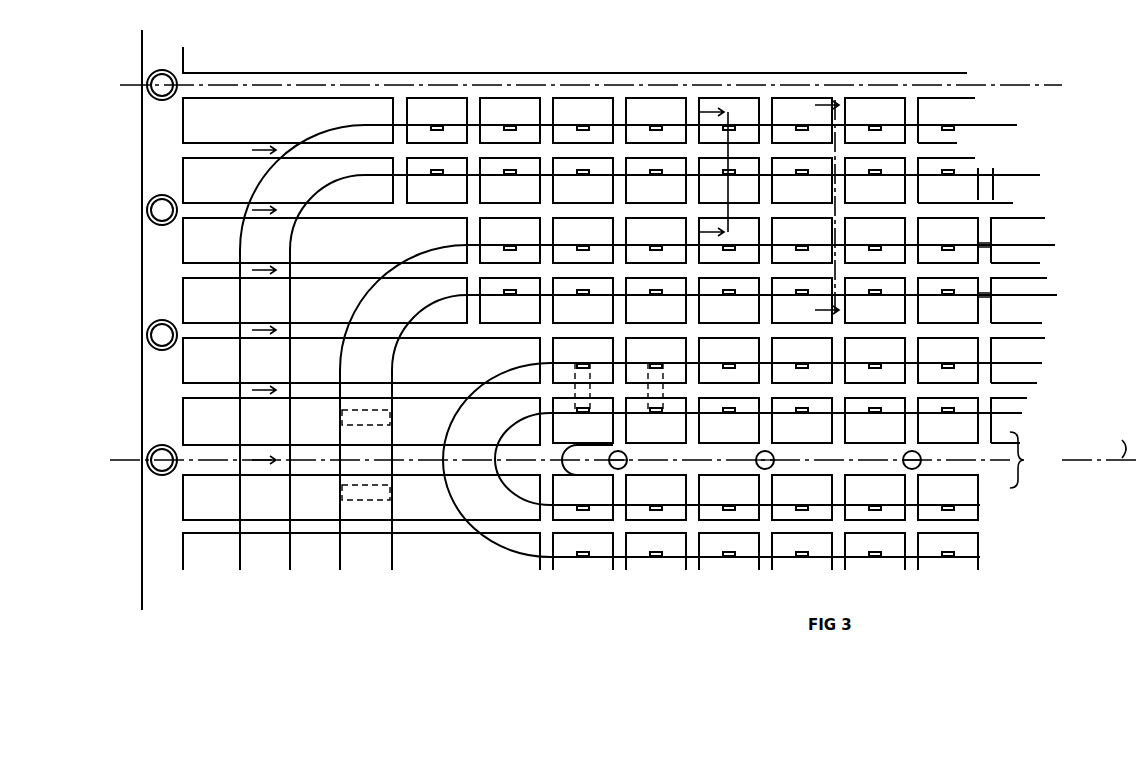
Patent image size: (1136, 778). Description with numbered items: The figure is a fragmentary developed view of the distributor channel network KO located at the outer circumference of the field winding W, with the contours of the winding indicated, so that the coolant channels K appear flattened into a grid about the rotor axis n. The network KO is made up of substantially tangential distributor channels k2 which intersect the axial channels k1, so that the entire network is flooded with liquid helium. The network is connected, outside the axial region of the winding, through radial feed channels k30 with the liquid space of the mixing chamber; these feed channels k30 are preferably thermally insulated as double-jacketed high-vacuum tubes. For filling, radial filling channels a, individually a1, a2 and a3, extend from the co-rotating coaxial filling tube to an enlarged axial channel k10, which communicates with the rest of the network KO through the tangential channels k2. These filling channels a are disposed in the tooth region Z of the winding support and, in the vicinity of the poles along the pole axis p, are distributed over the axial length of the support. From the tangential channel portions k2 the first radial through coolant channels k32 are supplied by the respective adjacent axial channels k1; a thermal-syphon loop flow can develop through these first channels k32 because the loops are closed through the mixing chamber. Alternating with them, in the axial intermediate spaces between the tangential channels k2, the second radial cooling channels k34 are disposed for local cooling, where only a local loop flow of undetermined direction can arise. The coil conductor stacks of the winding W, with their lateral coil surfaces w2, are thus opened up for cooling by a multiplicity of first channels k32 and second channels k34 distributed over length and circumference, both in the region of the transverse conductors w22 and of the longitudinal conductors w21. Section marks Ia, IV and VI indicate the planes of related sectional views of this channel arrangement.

The longitudinal axis n is at (599, 86).
The radial feed channels k30 is at (155, 95).
The section line Ia is at (612, 468).
The longitudinal conductors w21 is at (600, 130).
The second radial cooling channels k34 is at (878, 176).
The tangential distributor channels k2 is at (1018, 278).
The first radial cooling channels k32 is at (990, 247).
The axial channels k1 is at (1030, 386).
The enlarged axial channel k10 is at (862, 444).
The distributor channel network KO is at (948, 500).
The radial filling channel a1 is at (627, 458).
The radial filling channel a2 is at (774, 458).
The radial filling channel a3 is at (921, 458).
The coolant channels K is at (238, 522).
The radial filling channels a is at (712, 487).
The transverse conductors w22 is at (272, 254).
The field winding W is at (268, 540).
The lateral coil surfaces w2 is at (372, 515).
The section line VI is at (725, 173).
The section line IV is at (814, 208).
The tooth region Z is at (1025, 460).
The pole axis p is at (1116, 442).